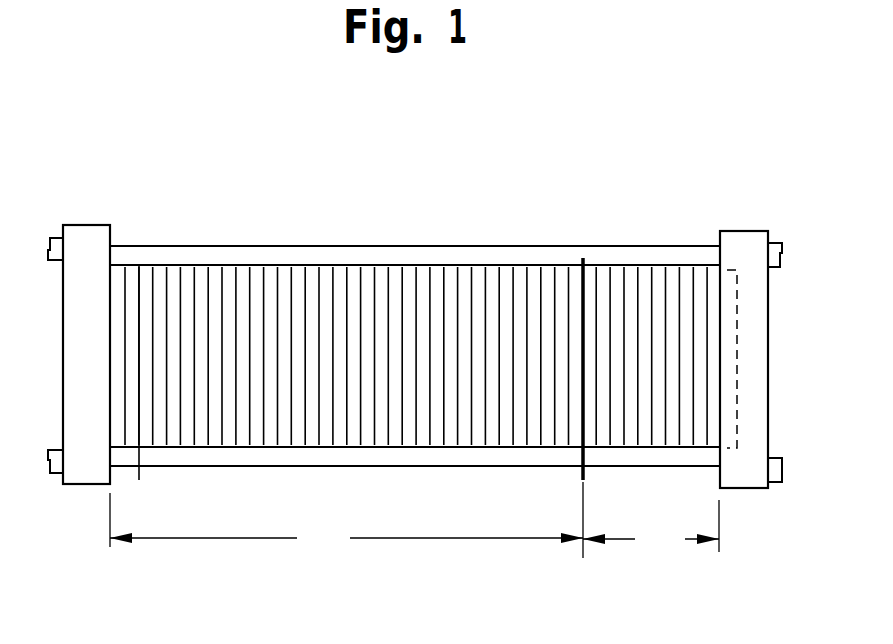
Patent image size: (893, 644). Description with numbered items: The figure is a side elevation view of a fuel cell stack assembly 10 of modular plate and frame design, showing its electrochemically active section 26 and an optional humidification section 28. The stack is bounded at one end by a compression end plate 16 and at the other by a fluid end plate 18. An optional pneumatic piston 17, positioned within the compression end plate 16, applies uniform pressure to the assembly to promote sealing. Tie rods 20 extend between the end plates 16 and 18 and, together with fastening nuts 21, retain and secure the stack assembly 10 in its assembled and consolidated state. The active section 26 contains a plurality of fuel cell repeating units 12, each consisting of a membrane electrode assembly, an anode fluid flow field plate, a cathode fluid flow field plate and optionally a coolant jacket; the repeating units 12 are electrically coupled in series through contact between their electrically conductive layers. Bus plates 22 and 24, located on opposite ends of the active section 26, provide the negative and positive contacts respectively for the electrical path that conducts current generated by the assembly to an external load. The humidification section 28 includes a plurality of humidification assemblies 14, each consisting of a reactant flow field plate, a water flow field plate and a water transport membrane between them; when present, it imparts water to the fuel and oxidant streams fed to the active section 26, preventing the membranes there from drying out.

The fuel cell stack assembly 10 is at (583, 190).
The fuel cell repeating unit 12 is at (190, 272).
The humidification assembly 14 is at (632, 272).
The compression end plate 16 is at (747, 237).
The pneumatic piston 17 is at (730, 380).
The fluid end plate 18 is at (97, 231).
The tie rods 20 is at (435, 246).
The fastening nuts 21 is at (50, 253).
The bus plate 22 is at (140, 473).
The bus plate 24 is at (582, 470).
The electrochemically active section 26 is at (346, 520).
The humidification section 28 is at (651, 526).